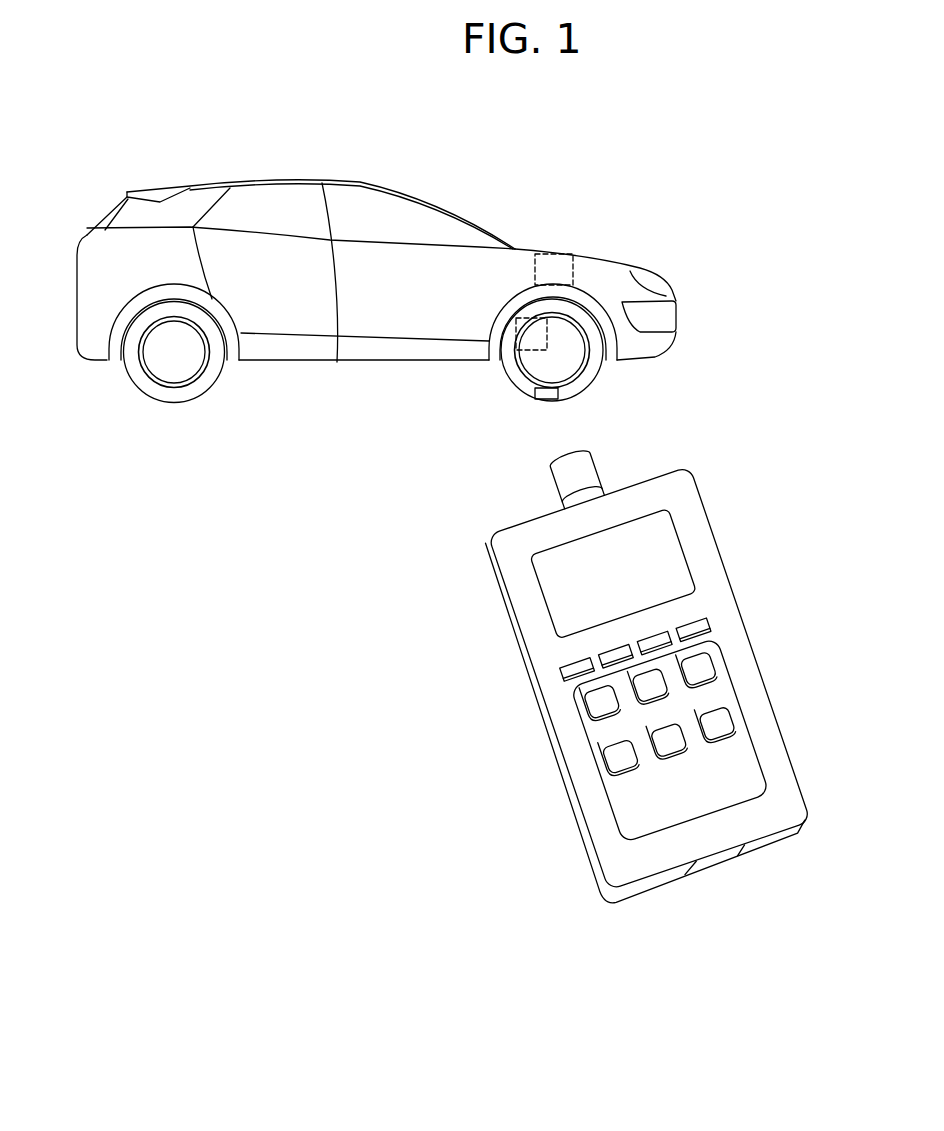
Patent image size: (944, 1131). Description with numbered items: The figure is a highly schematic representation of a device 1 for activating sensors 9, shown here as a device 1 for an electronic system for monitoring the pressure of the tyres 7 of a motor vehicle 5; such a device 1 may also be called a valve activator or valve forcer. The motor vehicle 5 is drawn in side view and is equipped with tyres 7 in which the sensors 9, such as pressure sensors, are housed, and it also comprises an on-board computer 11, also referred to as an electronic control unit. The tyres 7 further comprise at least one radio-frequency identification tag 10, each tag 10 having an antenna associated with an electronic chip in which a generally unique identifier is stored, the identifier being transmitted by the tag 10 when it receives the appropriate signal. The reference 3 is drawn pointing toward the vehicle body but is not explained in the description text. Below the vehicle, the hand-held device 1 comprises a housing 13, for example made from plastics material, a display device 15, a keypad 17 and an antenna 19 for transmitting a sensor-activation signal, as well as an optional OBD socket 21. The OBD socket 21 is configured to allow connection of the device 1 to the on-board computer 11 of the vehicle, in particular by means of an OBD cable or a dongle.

The device 1 is at (507, 518).
The vehicle 3 is at (600, 288).
The motor vehicle 5 is at (313, 178).
The tyres 7 is at (601, 373).
The sensors 9 is at (538, 352).
The radio-frequency identification tag 10 is at (543, 399).
The on-board computer 11 is at (548, 253).
The housing 13 is at (548, 748).
The display device 15 is at (551, 590).
The keypad 17 is at (738, 662).
The antenna 19 is at (605, 448).
The OBD socket 21 is at (718, 866).